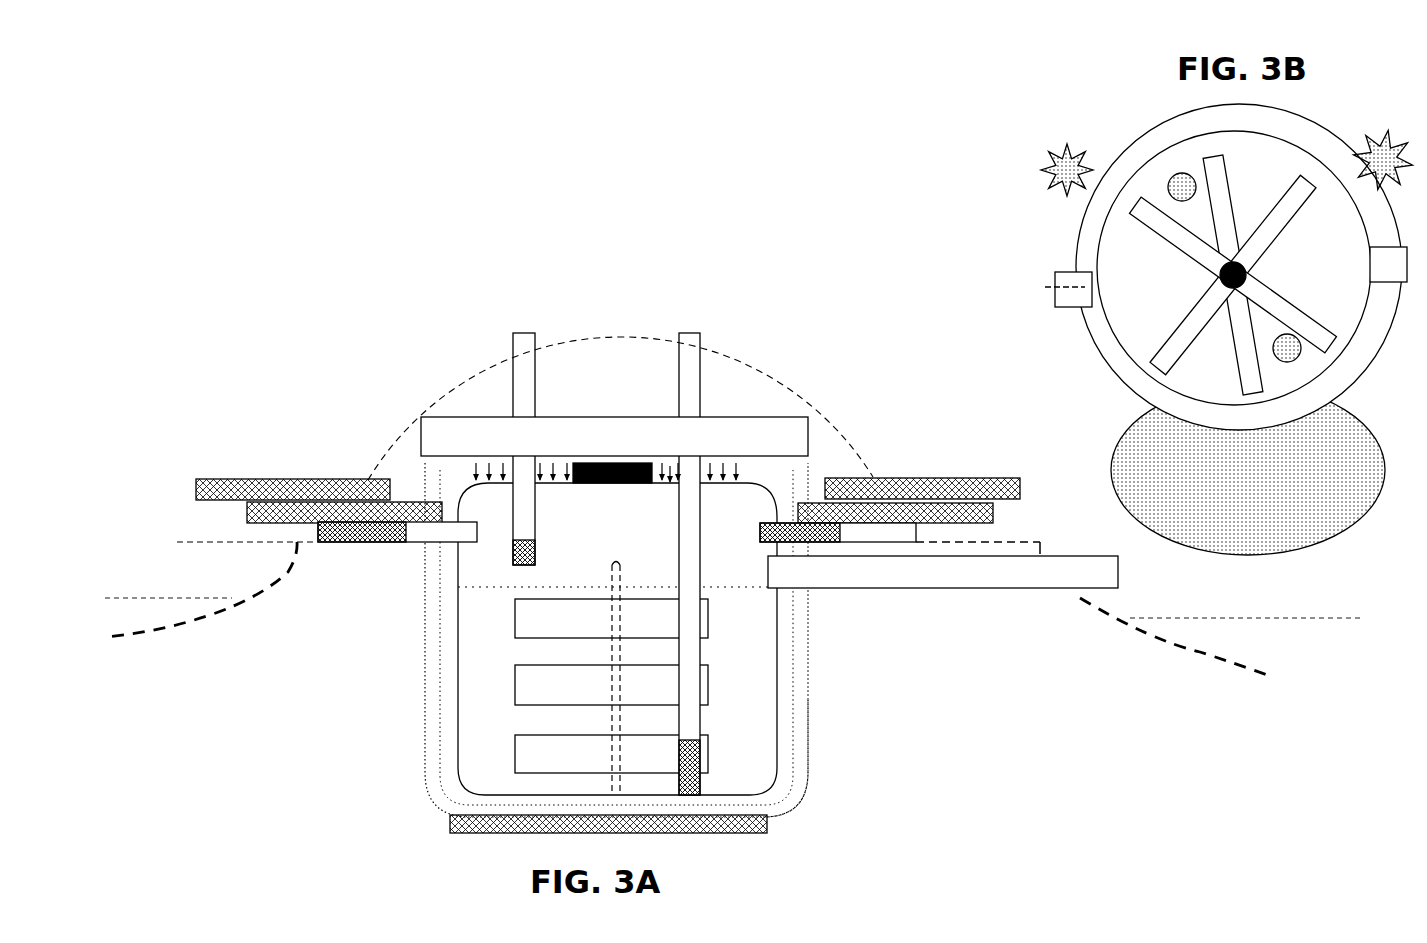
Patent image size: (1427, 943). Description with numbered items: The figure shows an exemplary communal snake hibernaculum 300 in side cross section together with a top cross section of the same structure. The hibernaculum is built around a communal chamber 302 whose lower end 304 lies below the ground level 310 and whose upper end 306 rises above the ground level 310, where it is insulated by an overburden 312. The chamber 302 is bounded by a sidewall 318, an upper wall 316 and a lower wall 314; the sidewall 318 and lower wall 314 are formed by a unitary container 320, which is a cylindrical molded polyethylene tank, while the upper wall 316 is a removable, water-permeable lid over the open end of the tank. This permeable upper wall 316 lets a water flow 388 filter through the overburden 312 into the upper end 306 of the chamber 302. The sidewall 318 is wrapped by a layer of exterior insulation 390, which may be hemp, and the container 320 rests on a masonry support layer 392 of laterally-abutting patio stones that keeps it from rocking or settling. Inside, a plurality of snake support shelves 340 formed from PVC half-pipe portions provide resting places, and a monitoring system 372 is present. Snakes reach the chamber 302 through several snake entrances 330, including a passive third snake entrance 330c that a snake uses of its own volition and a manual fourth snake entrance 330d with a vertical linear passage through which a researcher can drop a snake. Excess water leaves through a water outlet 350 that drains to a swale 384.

In FIG. 3A, the communal snake hibernaculum 300 is at (392, 332).
In FIG. 3B, the communal snake hibernaculum 300 is at (1090, 135).
In FIG. 3A, the communal chamber 302 is at (748, 703).
In FIG. 3A, the lower end 304 is at (842, 732).
In FIG. 3A, the upper end 306 is at (770, 406).
In FIG. 3A, the ground level 310 is at (958, 542).
In FIG. 3A, the overburden 312 is at (725, 370).
In FIG. 3A, the lower wall 314 is at (728, 795).
In FIG. 3A, the upper wall 316 is at (483, 417).
In FIG. 3A, the sidewall 318 is at (456, 690).
In FIG. 3A, the container 320 is at (456, 761).
In FIG. 3A, the snake entrances 330 is at (535, 380).
In FIG. 3A, the third snake entrance 330c is at (327, 530).
In FIG. 3A, the fourth snake entrance 330d is at (513, 353).
In FIG. 3B, the fourth snake entrance 330d is at (1168, 185).
In FIG. 3A, the snake support shelves 340 is at (515, 633).
In FIG. 3B, the snake support shelves 340 is at (1175, 317).
In FIG. 3A, the water outlet 350 is at (942, 588).
In FIG. 3A, the monitoring system 372 is at (673, 328).
In FIG. 3B, the monitoring system 372 is at (1289, 360).
In FIG. 3A, the swale 384 is at (1271, 592).
In FIG. 3B, the swale 384 is at (1132, 447).
In FIG. 3A, the water flow 388 is at (475, 470).
In FIG. 3A, the insulation 390 is at (441, 652).
In FIG. 3A, the support layer 392 is at (747, 818).